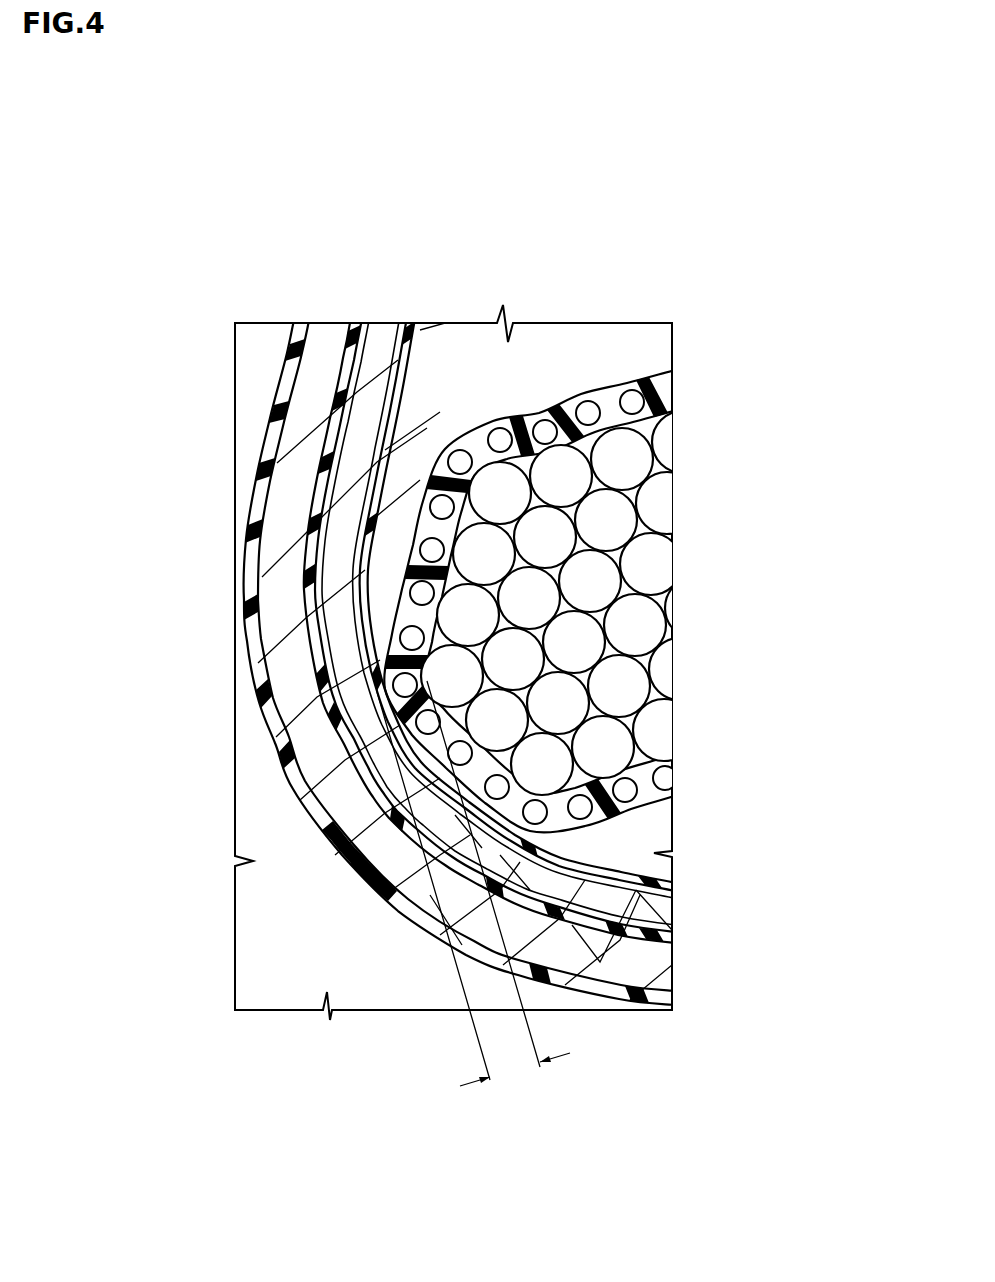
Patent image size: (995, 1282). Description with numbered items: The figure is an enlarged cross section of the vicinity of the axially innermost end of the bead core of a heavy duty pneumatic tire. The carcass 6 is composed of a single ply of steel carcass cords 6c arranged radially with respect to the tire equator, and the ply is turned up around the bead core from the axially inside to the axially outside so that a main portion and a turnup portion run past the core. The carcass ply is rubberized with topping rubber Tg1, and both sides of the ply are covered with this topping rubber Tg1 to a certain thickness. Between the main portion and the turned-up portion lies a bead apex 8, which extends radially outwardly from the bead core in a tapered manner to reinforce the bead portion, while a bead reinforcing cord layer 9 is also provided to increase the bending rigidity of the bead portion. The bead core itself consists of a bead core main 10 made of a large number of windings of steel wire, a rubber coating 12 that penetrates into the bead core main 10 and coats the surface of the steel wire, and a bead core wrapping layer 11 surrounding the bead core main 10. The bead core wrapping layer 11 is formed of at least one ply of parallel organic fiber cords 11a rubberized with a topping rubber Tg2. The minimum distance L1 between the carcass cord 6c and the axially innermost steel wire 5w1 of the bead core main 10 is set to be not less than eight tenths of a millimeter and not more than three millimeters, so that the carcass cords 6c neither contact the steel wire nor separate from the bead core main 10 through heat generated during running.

The bead reinforcing cord layer 9 is at (313, 355).
The topping rubber Tg1 is at (410, 355).
The bead apex 8 is at (472, 357).
The bead core wrapping layer 11 is at (537, 497).
The topping rubber Tg2 is at (535, 612).
The organic fiber cords 11a is at (632, 402).
The bead core main 10 is at (614, 552).
The rubber coating 12 is at (670, 615).
The axially innermost steel wire 5w1 is at (458, 677).
The carcass 6 is at (366, 578).
The carcass cords 6c is at (367, 731).
The minimum distance L1 is at (473, 883).